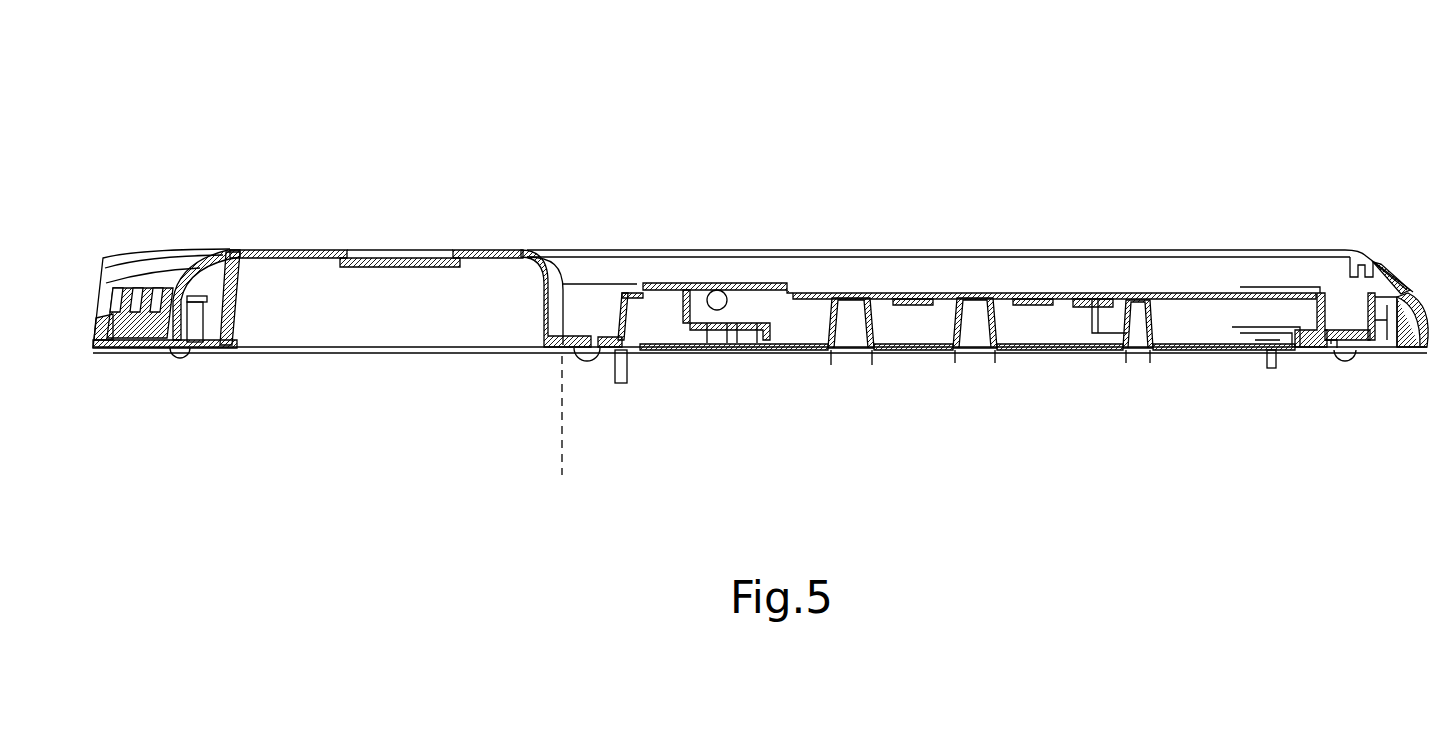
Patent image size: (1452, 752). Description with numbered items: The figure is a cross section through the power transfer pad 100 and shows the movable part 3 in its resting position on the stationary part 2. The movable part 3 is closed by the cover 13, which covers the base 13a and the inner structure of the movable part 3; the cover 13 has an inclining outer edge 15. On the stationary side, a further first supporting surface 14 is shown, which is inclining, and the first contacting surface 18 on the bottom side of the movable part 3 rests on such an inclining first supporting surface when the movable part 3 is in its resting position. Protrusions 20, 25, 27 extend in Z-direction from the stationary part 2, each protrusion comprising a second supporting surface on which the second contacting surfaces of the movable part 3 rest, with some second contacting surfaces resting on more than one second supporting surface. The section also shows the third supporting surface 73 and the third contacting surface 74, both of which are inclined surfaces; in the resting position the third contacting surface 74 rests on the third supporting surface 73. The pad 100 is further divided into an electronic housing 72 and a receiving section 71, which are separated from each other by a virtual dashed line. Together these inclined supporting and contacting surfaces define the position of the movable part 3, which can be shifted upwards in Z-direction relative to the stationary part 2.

The pad 100 is at (759, 150).
The stationary part 2 is at (552, 366).
The movable part 3 is at (905, 236).
The cover 13 is at (1265, 250).
The base 13a is at (757, 285).
The first supporting surface 14 is at (1387, 318).
The outer edge 15 is at (1382, 268).
The first contacting surface 18 is at (1417, 353).
The protrusion 20 is at (1140, 337).
The protrusion 25 is at (850, 333).
The protrusion 27 is at (975, 335).
The receiving section 71 is at (1073, 452).
The electronic housing 72 is at (313, 250).
The third supporting surface 73 is at (521, 250).
The third contacting surface 74 is at (548, 258).